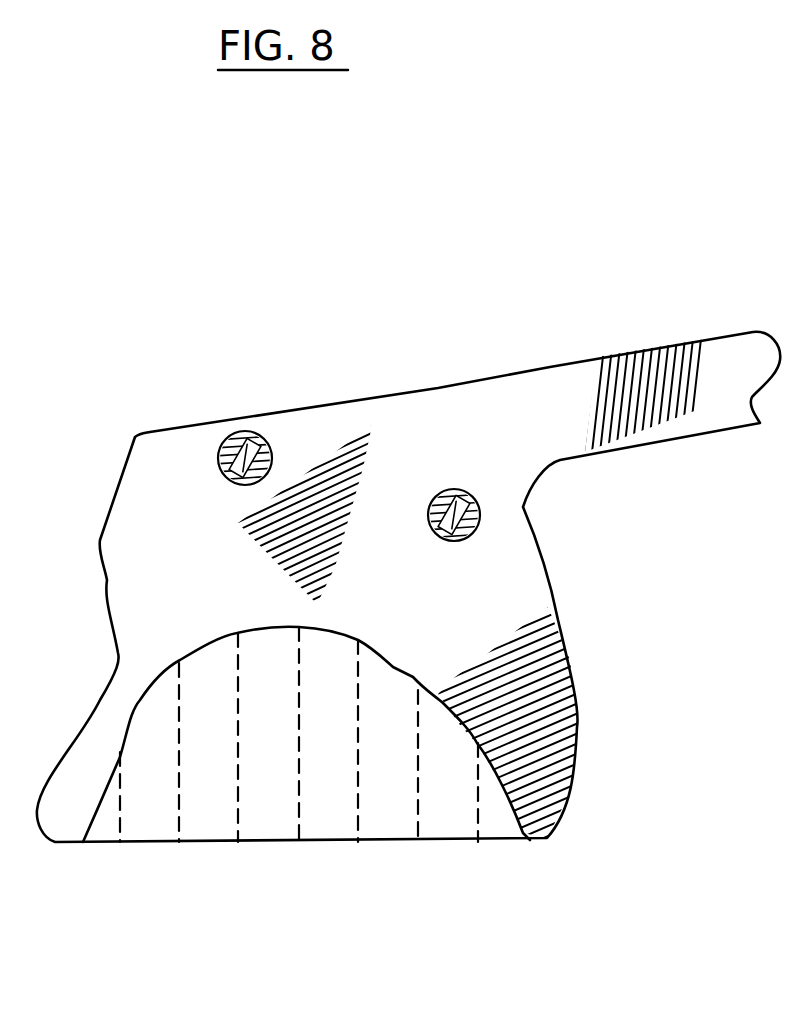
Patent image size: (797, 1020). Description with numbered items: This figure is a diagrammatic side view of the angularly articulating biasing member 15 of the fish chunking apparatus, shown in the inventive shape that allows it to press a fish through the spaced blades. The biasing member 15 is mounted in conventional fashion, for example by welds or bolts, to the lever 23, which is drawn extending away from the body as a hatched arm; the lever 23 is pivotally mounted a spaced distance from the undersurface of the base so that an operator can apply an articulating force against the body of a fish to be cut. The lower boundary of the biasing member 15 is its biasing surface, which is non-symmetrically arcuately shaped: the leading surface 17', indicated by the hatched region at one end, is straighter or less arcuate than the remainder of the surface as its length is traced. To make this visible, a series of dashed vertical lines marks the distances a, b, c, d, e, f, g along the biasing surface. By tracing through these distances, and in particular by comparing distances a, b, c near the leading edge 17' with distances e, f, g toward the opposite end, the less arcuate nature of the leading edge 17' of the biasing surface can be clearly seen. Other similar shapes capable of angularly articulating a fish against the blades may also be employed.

The biasing member 15 is at (420, 595).
The leading surface 17' is at (572, 724).
The lever 23 is at (750, 376).
The distance a is at (478, 810).
The distance b is at (418, 800).
The distance c is at (358, 775).
The distance d is at (299, 803).
The distance e is at (238, 797).
The distance f is at (179, 743).
The distance g is at (120, 803).